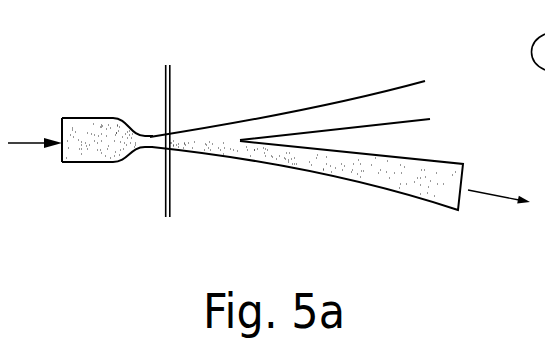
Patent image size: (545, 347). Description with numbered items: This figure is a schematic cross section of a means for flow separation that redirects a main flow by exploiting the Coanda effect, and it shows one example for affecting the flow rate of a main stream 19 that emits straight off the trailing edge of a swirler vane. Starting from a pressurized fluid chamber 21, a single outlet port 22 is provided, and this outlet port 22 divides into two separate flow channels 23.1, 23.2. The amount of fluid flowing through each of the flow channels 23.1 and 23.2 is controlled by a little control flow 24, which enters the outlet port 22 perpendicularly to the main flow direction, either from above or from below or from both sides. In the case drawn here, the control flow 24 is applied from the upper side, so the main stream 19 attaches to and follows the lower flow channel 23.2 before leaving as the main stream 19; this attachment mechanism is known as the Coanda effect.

The main stream 19 is at (492, 203).
The pressurized fluid chamber 21 is at (88, 131).
The outlet port 22 is at (143, 148).
The flow channel 23.1 is at (294, 97).
The flow channel 23.2 is at (293, 184).
The control flow 24 is at (165, 51).